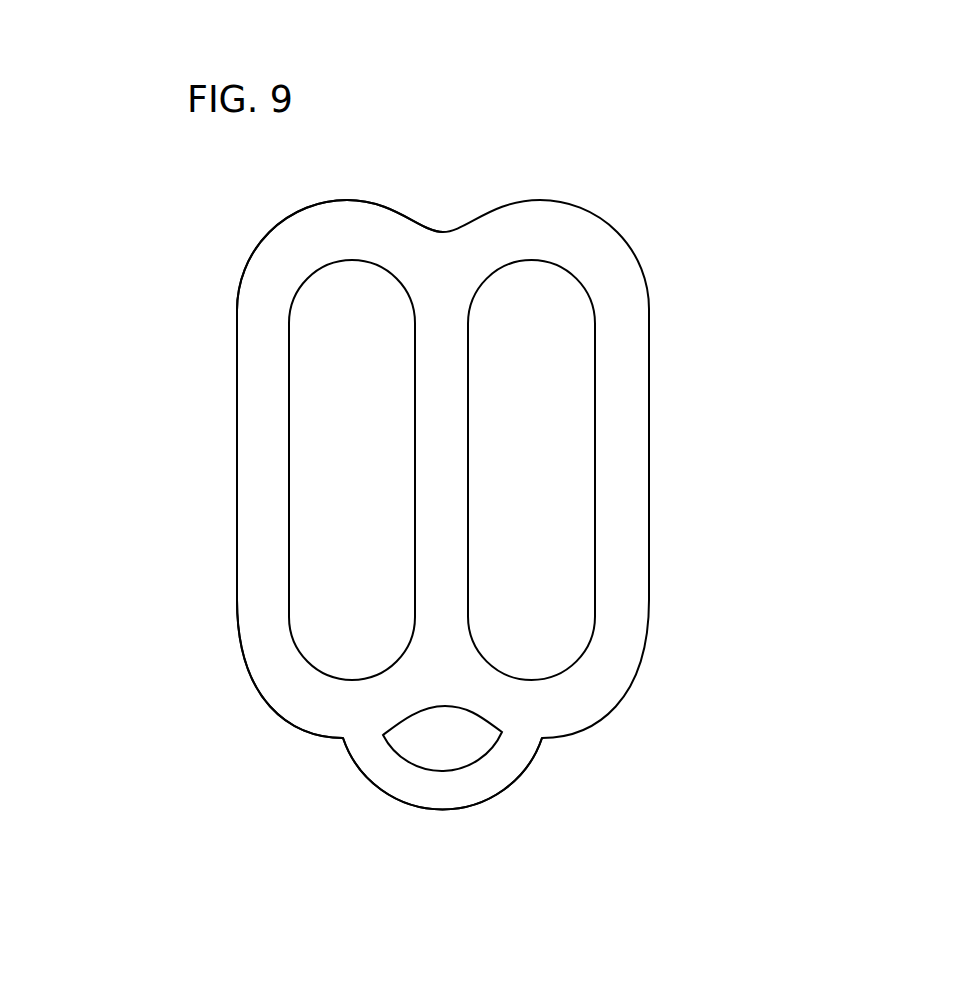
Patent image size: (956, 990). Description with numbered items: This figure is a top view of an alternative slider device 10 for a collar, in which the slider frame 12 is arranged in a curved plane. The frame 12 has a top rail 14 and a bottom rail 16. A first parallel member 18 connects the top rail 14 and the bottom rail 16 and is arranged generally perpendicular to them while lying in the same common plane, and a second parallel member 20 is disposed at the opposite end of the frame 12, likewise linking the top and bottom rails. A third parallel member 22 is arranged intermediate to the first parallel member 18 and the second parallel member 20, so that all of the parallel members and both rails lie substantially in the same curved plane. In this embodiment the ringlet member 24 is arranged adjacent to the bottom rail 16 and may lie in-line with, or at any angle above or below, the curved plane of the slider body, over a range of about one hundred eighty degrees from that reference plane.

The slider device 10 is at (163, 855).
The slider frame 12 is at (575, 206).
The top rail 14 is at (283, 240).
The bottom rail 16 is at (300, 697).
The first parallel member 18 is at (625, 461).
The second parallel member 20 is at (257, 453).
The third parallel member 22 is at (450, 393).
The ringlet member 24 is at (442, 790).